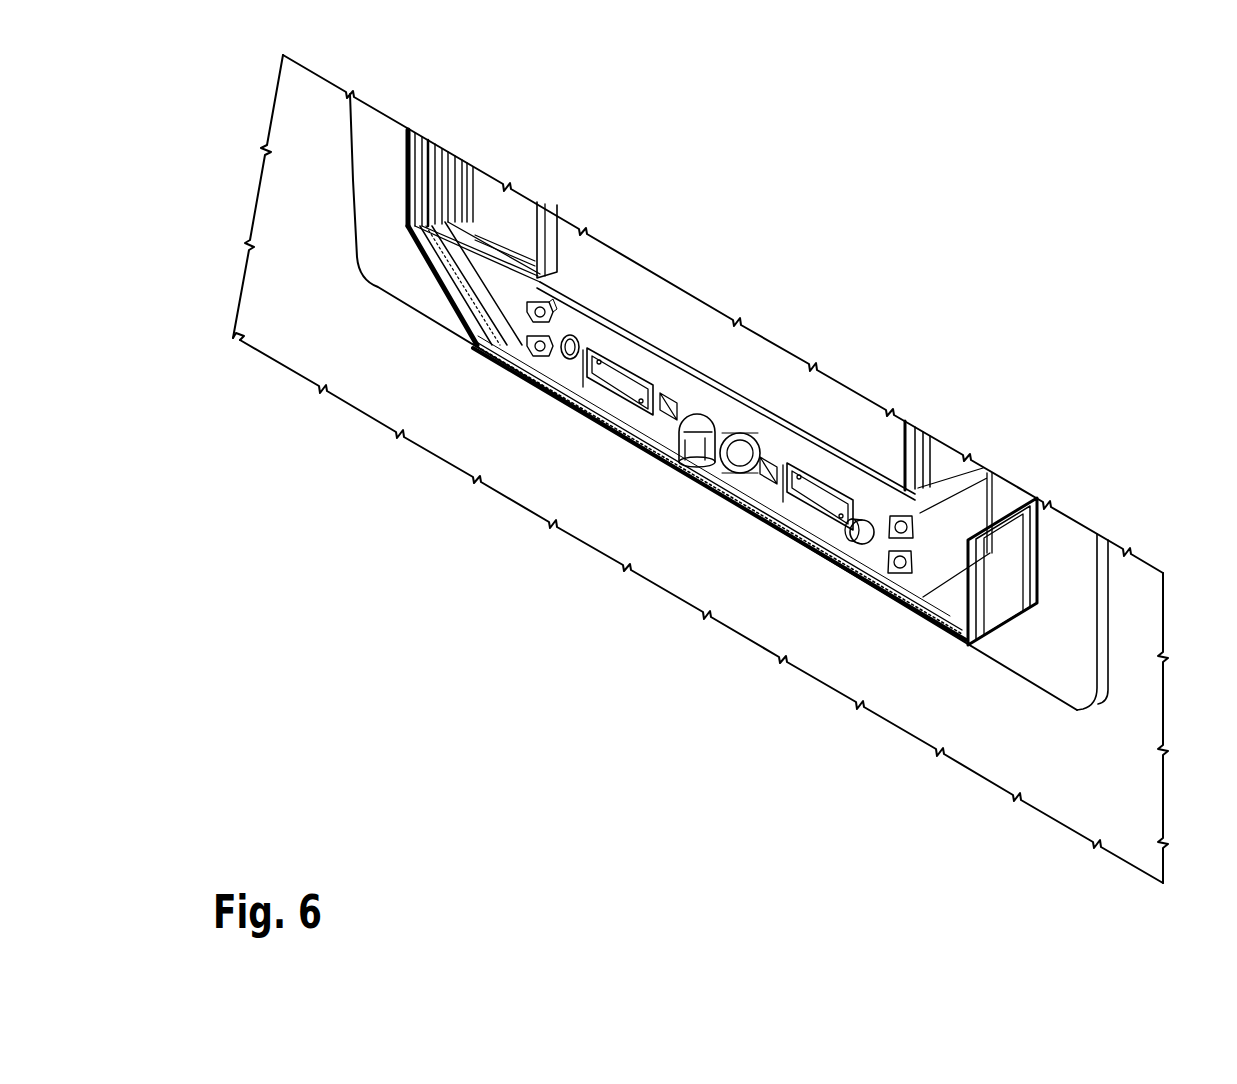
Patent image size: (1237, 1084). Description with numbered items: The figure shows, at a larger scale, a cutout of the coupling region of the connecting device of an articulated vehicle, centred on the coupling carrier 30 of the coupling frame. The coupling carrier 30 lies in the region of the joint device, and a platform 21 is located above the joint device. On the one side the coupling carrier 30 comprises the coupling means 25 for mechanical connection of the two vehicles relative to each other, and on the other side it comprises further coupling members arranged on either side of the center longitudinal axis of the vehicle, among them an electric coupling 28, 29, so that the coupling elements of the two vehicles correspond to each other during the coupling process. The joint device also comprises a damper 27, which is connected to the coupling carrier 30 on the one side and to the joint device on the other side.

The platform 21 is at (541, 314).
The coupling means 25 is at (712, 463).
The damper 27 is at (900, 514).
The electric coupling 28 is at (603, 373).
The electric coupling 29 is at (807, 493).
The coupling carrier 30 is at (545, 405).